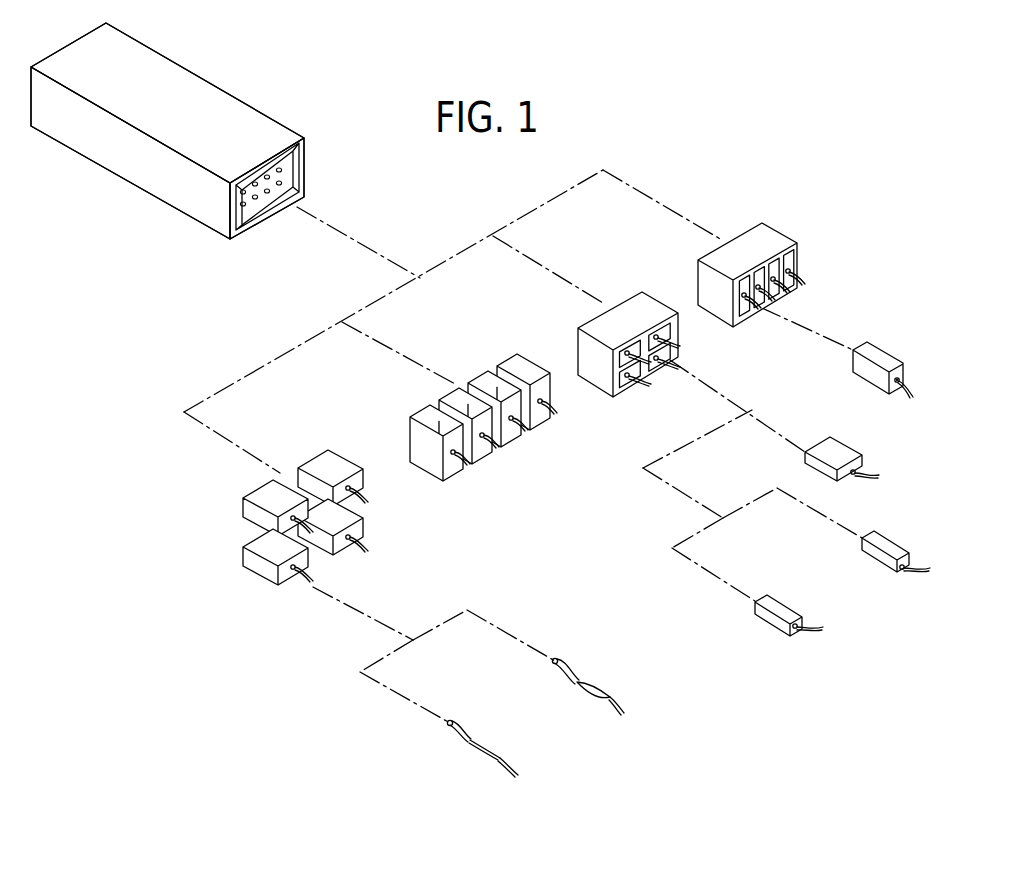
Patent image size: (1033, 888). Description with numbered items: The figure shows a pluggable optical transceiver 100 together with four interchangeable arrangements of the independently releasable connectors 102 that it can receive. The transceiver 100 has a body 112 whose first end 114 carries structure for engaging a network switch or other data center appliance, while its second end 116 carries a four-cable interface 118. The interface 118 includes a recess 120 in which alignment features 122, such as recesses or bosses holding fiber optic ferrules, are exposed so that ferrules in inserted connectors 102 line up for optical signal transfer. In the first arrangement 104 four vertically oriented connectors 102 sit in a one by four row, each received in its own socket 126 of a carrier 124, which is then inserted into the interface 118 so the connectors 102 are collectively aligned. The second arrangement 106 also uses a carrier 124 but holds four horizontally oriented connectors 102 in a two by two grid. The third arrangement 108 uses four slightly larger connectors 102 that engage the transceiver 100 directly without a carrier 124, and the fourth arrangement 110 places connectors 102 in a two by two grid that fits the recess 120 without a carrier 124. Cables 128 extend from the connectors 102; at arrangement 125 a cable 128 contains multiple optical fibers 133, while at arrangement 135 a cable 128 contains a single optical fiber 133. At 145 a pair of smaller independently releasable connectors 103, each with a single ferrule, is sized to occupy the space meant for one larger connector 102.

The transceiver 100 is at (276, 66).
The connector 102 is at (790, 266).
The independently releasable connector 103 is at (892, 548).
The first arrangement 104 is at (706, 287).
The second arrangement 106 is at (568, 315).
The third arrangement 108 is at (398, 400).
The fourth arrangement 110 is at (213, 492).
The body 112 is at (158, 60).
The first end 114 is at (101, 48).
The second end 116 is at (284, 136).
The interface 118 is at (230, 203).
The recess 120 is at (263, 225).
The alignment feature 122 is at (283, 171).
The carrier 124 is at (765, 240).
The arrangement 125 is at (645, 579).
The socket 126 is at (745, 311).
The cable 128 is at (573, 667).
The optical fiber 133 is at (613, 691).
The arrangement 135 is at (456, 768).
The pair of connectors arrangement 145 is at (658, 512).